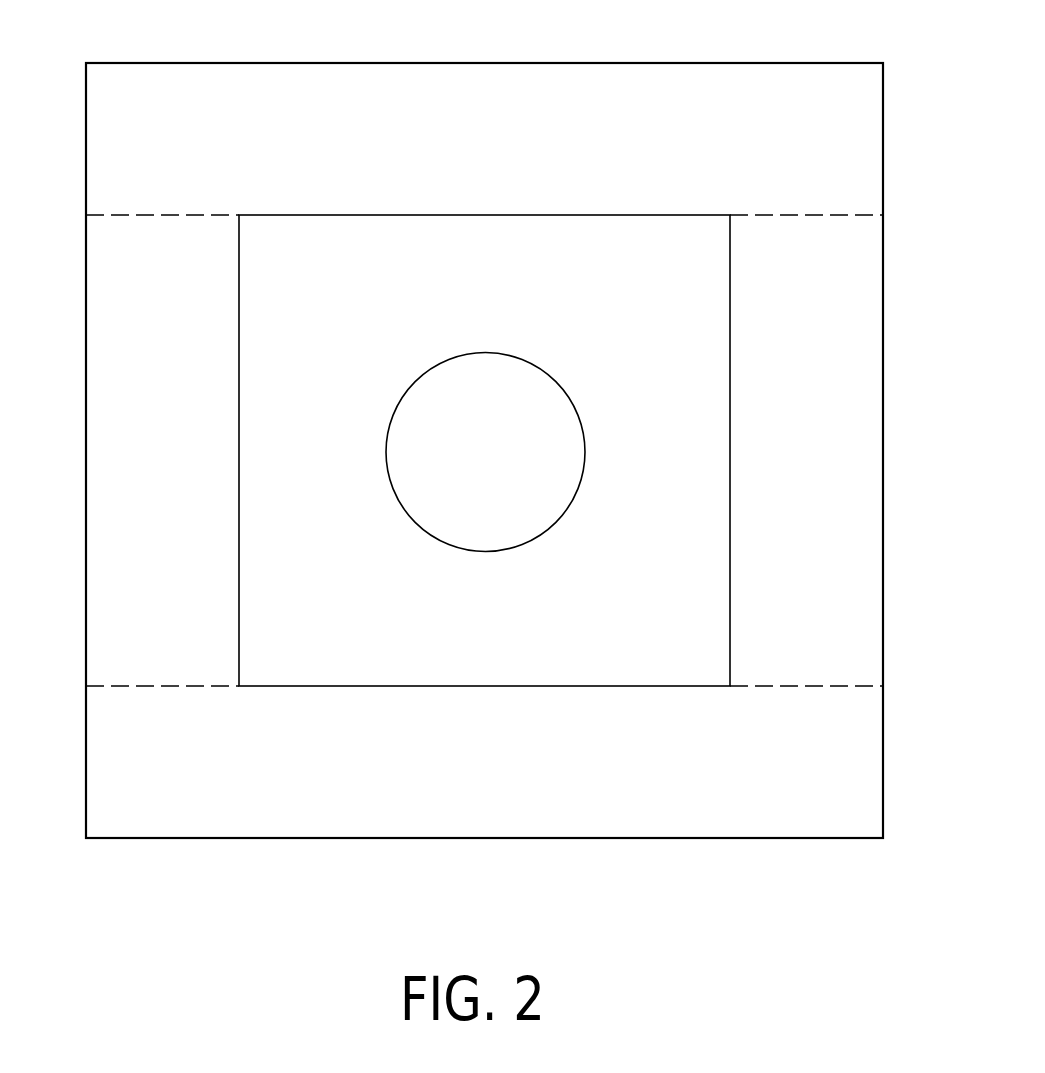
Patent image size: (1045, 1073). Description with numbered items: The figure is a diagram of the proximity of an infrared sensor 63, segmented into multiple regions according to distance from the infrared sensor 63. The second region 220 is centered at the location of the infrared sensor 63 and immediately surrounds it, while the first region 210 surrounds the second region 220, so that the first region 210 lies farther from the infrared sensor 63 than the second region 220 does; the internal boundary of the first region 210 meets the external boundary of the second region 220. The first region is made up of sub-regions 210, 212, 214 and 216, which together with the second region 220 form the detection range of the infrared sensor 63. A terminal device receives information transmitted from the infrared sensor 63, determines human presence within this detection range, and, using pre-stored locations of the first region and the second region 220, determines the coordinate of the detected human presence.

The first region 210 is at (670, 70).
The sub-region 212 is at (105, 470).
The sub-region 214 is at (863, 558).
The sub-region 216 is at (873, 752).
The second region 220 is at (723, 288).
The infrared sensor 63 is at (562, 386).